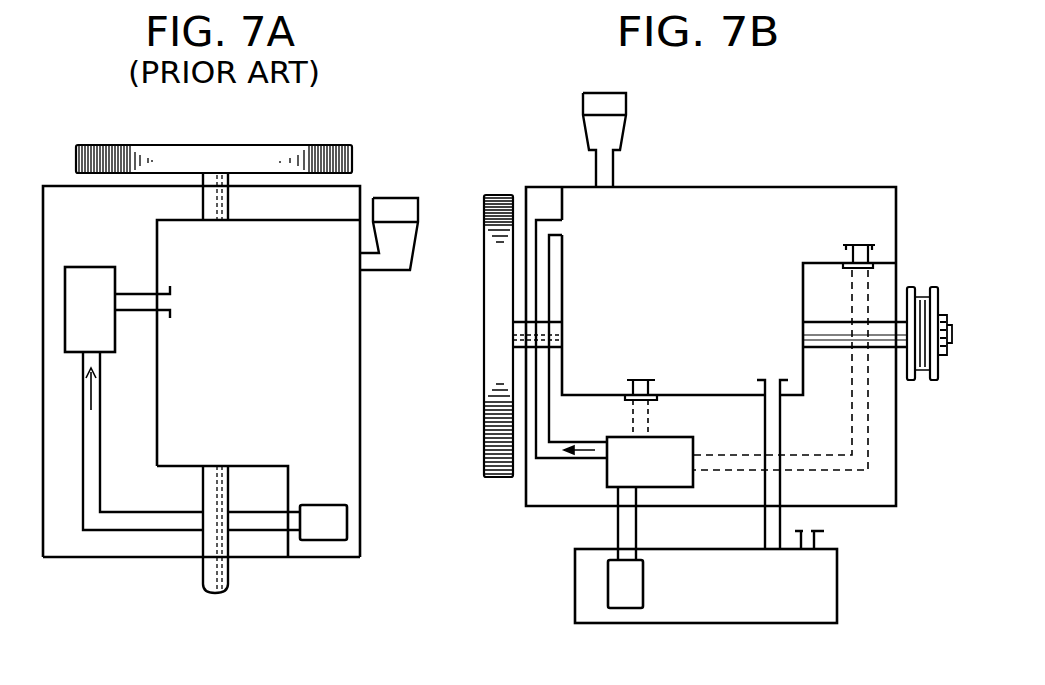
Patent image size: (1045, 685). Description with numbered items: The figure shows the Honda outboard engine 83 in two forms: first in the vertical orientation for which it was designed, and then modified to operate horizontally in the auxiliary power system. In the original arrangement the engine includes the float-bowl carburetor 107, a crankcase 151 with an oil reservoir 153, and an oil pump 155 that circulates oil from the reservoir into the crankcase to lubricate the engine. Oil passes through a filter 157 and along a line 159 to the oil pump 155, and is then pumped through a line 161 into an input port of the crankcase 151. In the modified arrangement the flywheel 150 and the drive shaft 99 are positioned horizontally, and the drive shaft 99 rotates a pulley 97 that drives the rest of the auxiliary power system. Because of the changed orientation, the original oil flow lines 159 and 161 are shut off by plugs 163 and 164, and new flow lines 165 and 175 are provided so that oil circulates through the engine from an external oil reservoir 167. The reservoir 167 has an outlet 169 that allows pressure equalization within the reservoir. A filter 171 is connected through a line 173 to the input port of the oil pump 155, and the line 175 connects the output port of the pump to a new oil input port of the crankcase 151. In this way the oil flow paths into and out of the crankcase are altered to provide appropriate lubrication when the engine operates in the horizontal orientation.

In FIG. 7A, the auxiliary engine 83 is at (52, 193).
In FIG. 7B, the pulley 97 is at (935, 378).
In FIG. 7A, the drive shaft 99 is at (218, 566).
In FIG. 7B, the drive shaft 99 is at (880, 327).
In FIG. 7A, the float-bowl carburetor 107 is at (398, 205).
In FIG. 7B, the float-bowl carburetor 107 is at (628, 125).
In FIG. 7A, the flywheel 150 is at (257, 148).
In FIG. 7B, the flywheel 150 is at (488, 385).
In FIG. 7A, the crankcase 151 is at (348, 350).
In FIG. 7B, the crankcase 151 is at (703, 187).
In FIG. 7A, the oil reservoir 153 is at (355, 548).
In FIG. 7A, the oil pump 155 is at (92, 272).
In FIG. 7B, the oil pump 155 is at (607, 475).
In FIG. 7A, the filter 157 is at (327, 530).
In FIG. 7A, the line 159 is at (137, 520).
In FIG. 7B, the line 159 is at (885, 452).
In FIG. 7A, the line 161 is at (138, 302).
In FIG. 7B, the line 161 is at (645, 417).
In FIG. 7B, the plug 163 is at (850, 268).
In FIG. 7B, the plug 164 is at (637, 375).
In FIG. 7B, the flow line 165 is at (765, 530).
In FIG. 7B, the external oil reservoir 167 is at (580, 600).
In FIG. 7B, the outlet 169 is at (818, 525).
In FIG. 7B, the filter 171 is at (627, 593).
In FIG. 7B, the line 173 is at (625, 527).
In FIG. 7B, the line 175 is at (541, 285).